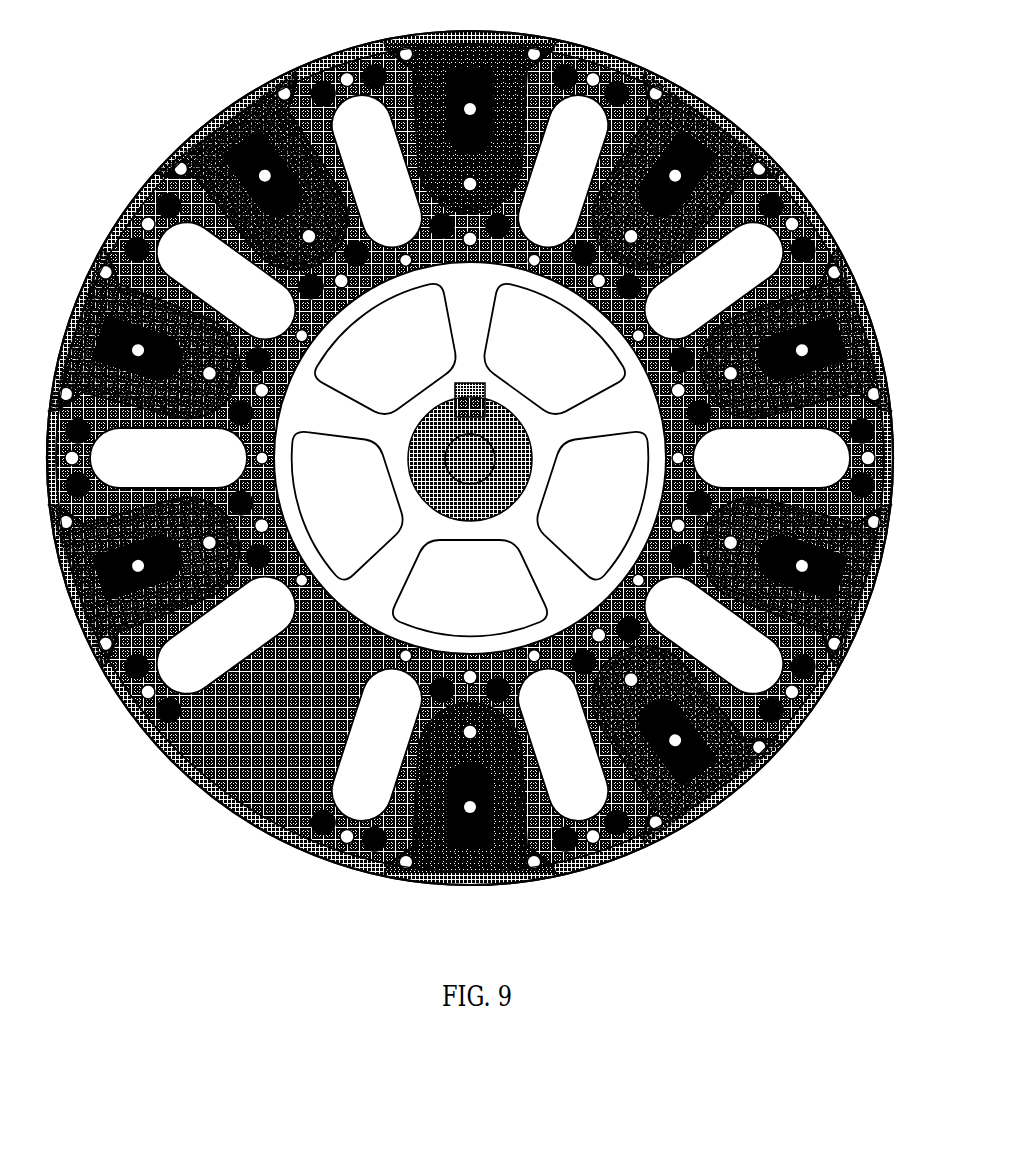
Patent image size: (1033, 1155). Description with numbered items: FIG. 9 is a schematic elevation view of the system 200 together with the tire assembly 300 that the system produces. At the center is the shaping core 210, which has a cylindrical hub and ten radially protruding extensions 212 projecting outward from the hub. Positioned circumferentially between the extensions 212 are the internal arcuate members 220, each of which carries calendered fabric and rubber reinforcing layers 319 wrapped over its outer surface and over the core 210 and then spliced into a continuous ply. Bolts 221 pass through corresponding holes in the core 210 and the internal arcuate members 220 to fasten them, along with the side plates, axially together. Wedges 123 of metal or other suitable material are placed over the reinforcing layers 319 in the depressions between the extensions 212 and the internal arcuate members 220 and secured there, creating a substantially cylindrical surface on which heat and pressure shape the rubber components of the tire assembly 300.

The assembly 300 is at (797, 47).
The system 200 is at (797, 90).
The wedges 123 is at (535, 38).
The core 210 is at (842, 423).
The internal arcuate members 220 is at (795, 555).
The extensions 212 is at (456, 643).
The reinforcing layers 319 is at (356, 168).
The bolts 221 is at (576, 44).